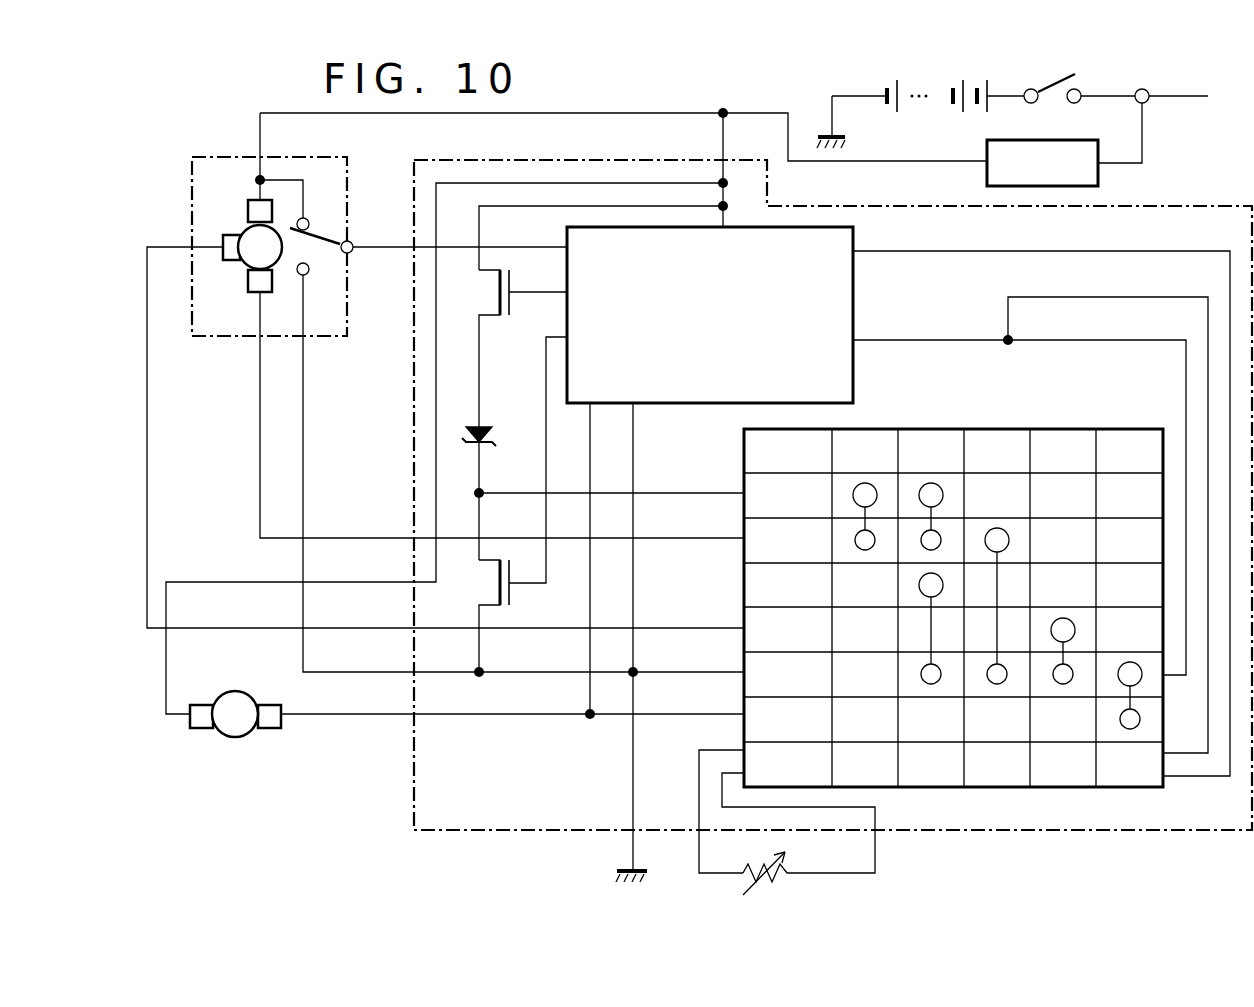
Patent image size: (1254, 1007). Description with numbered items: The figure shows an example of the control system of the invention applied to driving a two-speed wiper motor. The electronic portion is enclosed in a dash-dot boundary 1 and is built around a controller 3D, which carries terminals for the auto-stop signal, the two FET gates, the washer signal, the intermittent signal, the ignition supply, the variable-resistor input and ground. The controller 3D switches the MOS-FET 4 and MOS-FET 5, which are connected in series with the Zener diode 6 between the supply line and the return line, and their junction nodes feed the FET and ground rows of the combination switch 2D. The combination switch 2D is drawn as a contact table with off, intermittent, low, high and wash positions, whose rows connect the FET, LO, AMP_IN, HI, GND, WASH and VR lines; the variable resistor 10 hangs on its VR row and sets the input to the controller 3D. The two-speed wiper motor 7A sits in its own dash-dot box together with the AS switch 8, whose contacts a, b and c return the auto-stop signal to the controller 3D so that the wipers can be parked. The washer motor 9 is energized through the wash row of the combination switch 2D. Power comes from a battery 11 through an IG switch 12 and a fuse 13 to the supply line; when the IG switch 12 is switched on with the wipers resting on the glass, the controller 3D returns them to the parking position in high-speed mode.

The wiper control unit 1 is at (1188, 206).
The combination switch 2D is at (1075, 429).
The controller 3D is at (855, 278).
The MOS-FET 4 is at (490, 586).
The MOS-FET 5 is at (490, 295).
The Zener diode 6 is at (493, 426).
The two-speed wiper motor 7A is at (240, 262).
The AS switch 8 is at (311, 254).
The washer motor 9 is at (232, 692).
The variable resistor 10 is at (792, 861).
The battery 11 is at (950, 70).
The IG switch 12 is at (1078, 87).
The fuse 13 is at (1055, 139).